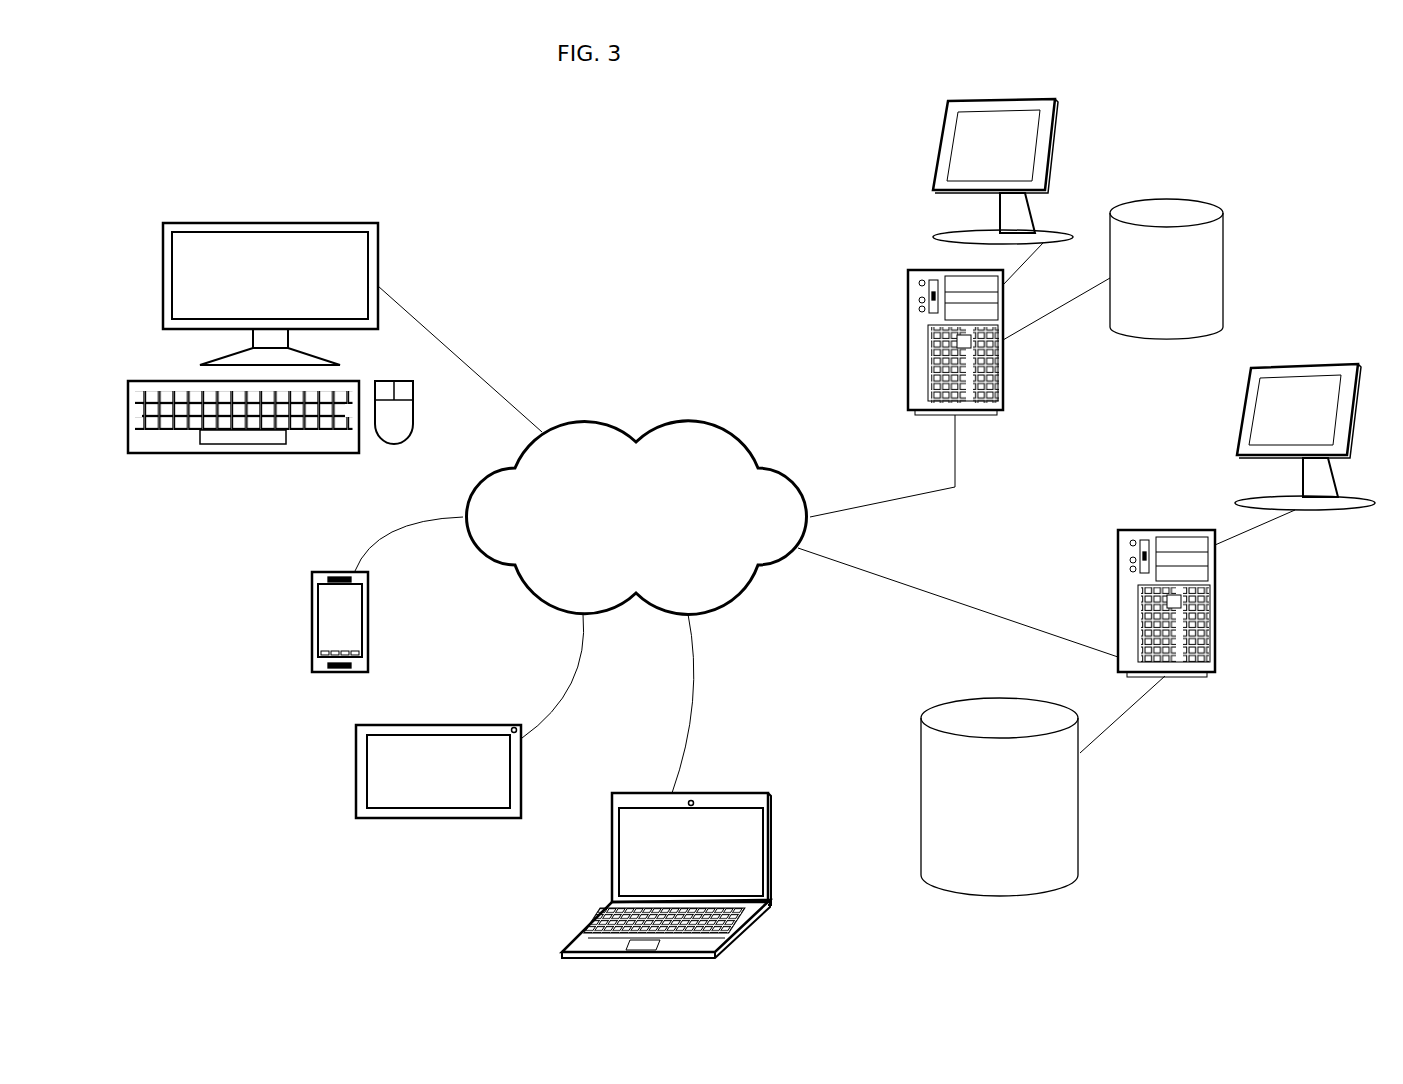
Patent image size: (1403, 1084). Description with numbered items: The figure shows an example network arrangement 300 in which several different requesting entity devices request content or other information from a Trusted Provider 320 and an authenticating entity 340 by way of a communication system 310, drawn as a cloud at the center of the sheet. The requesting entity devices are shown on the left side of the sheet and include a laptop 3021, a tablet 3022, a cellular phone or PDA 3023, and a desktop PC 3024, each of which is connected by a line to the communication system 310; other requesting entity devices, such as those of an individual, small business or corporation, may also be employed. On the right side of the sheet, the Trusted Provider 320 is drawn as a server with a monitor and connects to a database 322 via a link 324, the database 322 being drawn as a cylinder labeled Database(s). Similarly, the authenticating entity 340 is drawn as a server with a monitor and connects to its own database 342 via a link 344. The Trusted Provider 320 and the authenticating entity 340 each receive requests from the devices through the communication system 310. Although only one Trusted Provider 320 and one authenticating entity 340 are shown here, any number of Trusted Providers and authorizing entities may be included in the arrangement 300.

The requesting entity devices 300 is at (492, 125).
The laptop 3021 is at (612, 855).
The tablet 3022 is at (356, 763).
The cellular phone or PDA 3023 is at (310, 620).
The desktop PC 3024 is at (378, 240).
The communication system 310 is at (620, 425).
The Trusted Provider 320 is at (1215, 607).
The database 322 is at (1080, 805).
The link 324 is at (1130, 713).
The authenticating entity 340 is at (908, 296).
The database 342 is at (1223, 275).
The link 344 is at (1050, 317).